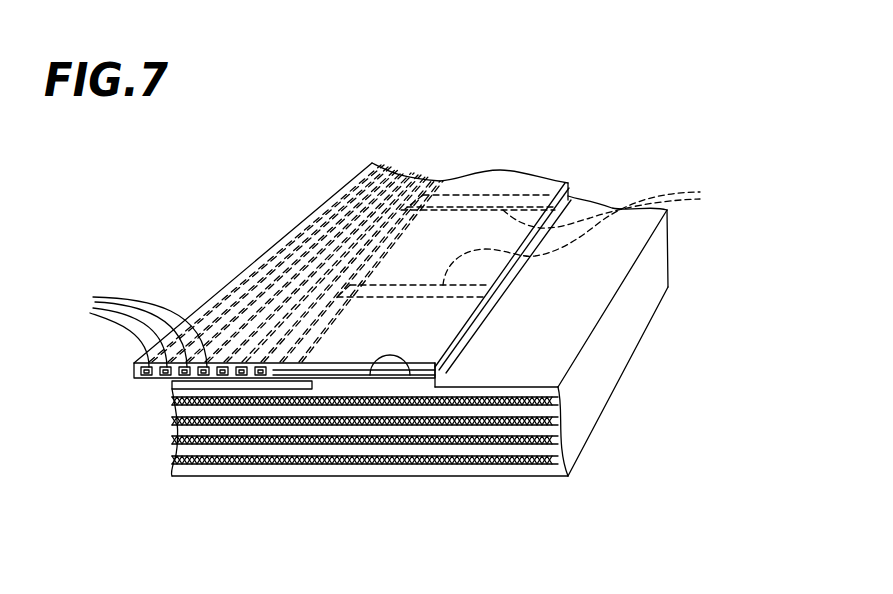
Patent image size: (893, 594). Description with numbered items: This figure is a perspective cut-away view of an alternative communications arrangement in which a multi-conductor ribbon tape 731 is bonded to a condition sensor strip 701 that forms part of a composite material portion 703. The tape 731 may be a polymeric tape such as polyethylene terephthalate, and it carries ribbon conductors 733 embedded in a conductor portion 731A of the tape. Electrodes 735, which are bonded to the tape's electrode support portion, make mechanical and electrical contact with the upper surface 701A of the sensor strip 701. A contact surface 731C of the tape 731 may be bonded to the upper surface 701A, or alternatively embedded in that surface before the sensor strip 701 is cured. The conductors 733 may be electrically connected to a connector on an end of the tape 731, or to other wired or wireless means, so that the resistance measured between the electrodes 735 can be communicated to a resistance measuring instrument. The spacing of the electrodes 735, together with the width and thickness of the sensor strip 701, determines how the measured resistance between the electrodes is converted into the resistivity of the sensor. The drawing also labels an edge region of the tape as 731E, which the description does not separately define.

The multi-conductor ribbon tape 731 is at (256, 213).
The conductor portion 731A is at (213, 296).
The ribbon conductors 733 is at (160, 331).
The electrodes 735 is at (543, 240).
The plate edge rim 731E is at (517, 268).
The composite material portion 703 is at (615, 393).
The contact surface 731C is at (337, 386).
The condition sensor strip 701 is at (440, 370).
The upper surface 701A is at (410, 375).